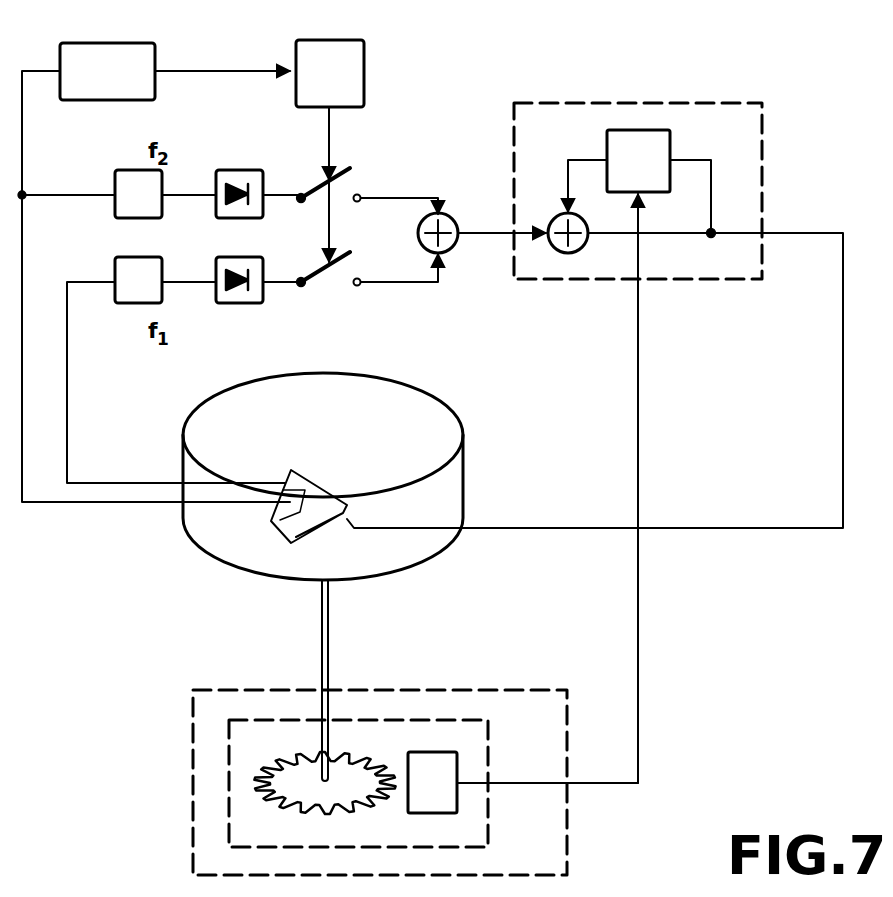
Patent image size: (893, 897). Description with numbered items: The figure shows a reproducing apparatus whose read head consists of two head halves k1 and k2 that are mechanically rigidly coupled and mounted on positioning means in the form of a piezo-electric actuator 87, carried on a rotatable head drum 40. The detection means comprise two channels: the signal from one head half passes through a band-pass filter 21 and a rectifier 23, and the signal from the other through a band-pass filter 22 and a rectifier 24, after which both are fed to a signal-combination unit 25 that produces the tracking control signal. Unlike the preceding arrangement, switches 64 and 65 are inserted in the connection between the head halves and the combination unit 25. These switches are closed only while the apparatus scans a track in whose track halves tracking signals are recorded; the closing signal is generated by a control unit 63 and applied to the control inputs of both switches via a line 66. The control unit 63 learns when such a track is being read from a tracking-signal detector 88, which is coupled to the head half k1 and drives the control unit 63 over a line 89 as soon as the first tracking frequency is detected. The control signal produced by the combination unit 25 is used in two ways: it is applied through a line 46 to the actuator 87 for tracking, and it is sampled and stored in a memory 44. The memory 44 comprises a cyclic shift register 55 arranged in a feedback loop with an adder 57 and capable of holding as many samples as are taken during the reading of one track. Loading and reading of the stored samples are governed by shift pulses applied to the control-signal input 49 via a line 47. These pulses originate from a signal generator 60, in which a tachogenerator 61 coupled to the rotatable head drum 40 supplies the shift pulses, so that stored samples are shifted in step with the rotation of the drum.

The f1 detector 88 is at (112, 40).
The line 89 is at (222, 60).
The control unit 63 is at (367, 74).
The line 66 is at (333, 138).
The band-pass filter 21 is at (125, 170).
The rectifier 23 is at (237, 170).
The switch 64 is at (318, 186).
The band-pass filter 22 is at (125, 304).
The rectifier 24 is at (237, 304).
The switch 65 is at (319, 292).
The signal-combination unit 25 is at (453, 216).
The memory 44 is at (571, 100).
The adder 57 is at (560, 215).
The shift register 55 is at (640, 130).
The control-signal input 49 is at (640, 287).
The line 47 is at (640, 407).
The line 46 is at (705, 515).
The rotatable head drum 40 is at (403, 388).
The piezo-electric actuator 87 is at (317, 480).
The head half k1 is at (262, 512).
The head half k2 is at (300, 538).
The signal generator 60 is at (568, 766).
The tachogenerator 61 is at (490, 747).